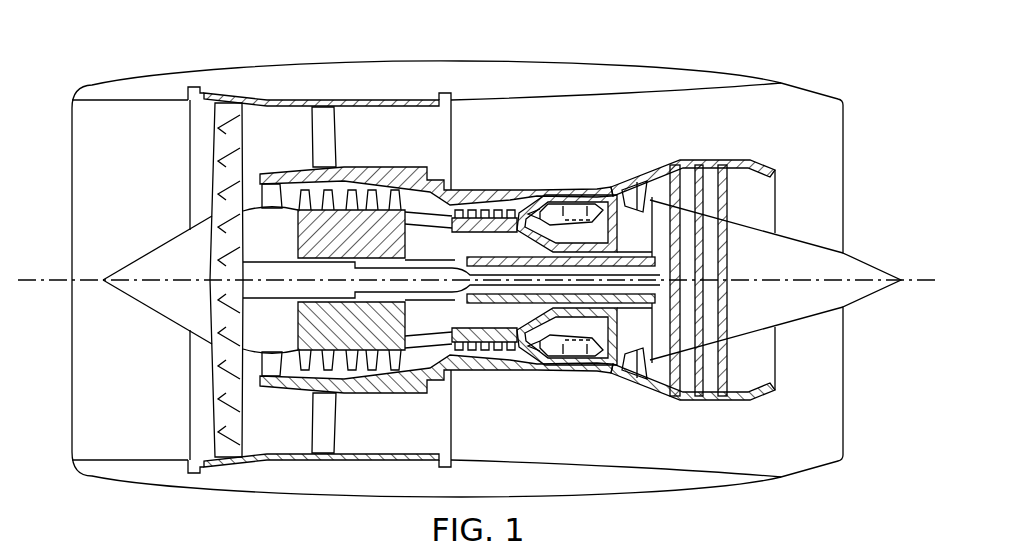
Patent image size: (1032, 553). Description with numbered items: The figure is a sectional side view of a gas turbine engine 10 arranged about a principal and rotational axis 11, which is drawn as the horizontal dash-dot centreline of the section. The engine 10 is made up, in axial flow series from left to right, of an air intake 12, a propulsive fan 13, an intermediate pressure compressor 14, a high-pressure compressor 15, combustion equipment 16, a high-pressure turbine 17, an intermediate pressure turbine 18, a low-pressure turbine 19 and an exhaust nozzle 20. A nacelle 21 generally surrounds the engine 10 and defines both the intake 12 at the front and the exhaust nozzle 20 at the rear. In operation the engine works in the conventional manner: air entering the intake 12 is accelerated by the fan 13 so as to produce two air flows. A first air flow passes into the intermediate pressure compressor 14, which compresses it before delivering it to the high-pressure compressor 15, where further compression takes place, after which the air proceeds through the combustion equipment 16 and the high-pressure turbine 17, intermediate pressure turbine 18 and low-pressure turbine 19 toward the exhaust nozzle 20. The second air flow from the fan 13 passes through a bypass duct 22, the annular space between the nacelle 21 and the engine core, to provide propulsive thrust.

The gas turbine engine 10 is at (63, 119).
The principal and rotational axis 11 is at (56, 278).
The air intake 12 is at (160, 103).
The propulsive fan 13 is at (212, 419).
The intermediate pressure compressor 14 is at (357, 366).
The high-pressure compressor 15 is at (490, 200).
The combustion equipment 16 is at (561, 349).
The high-pressure turbine 17 is at (607, 366).
The intermediate pressure turbine 18 is at (646, 173).
The low-pressure turbine 19 is at (677, 376).
The exhaust nozzle 20 is at (845, 429).
The nacelle 21 is at (501, 83).
The bypass duct 22 is at (417, 141).